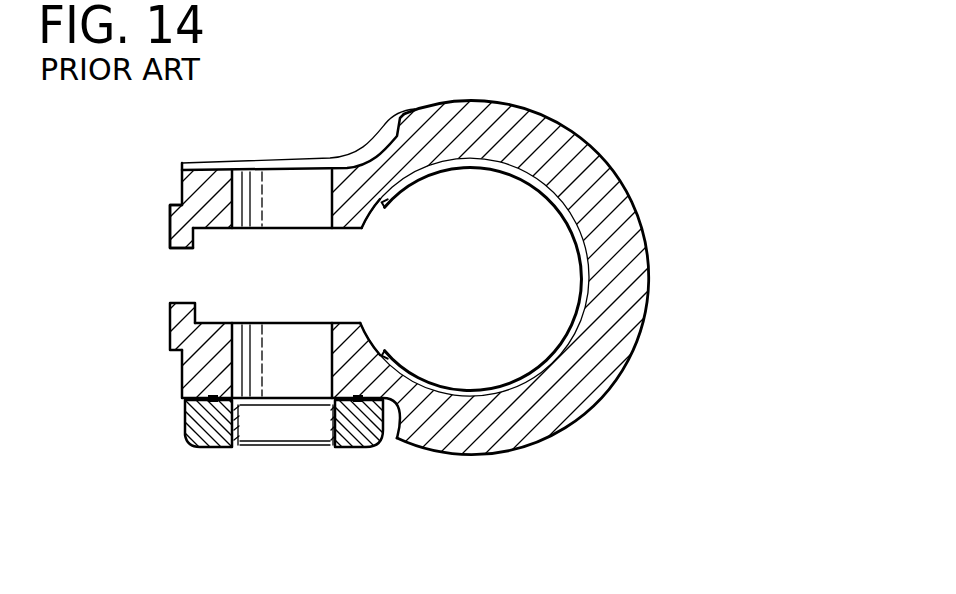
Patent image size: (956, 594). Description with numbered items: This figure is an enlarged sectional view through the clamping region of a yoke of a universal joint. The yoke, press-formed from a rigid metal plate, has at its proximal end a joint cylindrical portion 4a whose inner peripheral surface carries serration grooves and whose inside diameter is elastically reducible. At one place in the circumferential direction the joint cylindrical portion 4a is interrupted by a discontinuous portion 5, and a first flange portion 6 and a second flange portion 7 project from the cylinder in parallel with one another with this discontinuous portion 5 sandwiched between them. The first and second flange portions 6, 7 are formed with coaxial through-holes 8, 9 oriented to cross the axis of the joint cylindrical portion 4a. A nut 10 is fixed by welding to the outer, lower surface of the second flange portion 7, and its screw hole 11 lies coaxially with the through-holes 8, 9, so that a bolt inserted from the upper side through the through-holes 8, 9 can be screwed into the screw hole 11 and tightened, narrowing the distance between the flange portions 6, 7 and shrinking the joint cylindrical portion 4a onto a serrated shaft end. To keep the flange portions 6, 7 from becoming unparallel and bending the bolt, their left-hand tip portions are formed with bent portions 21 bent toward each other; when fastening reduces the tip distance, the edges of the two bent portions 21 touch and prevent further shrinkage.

The joint cylindrical portion 4a is at (596, 178).
The first flange portion 6 is at (216, 185).
The through-hole 8 is at (289, 190).
The discontinuous portion 5 is at (216, 250).
The bent portion 21 is at (185, 230).
The second flange portion 7 is at (205, 366).
The through-hole 9 is at (305, 378).
The nut 10 is at (203, 422).
The screw hole 11 is at (245, 420).